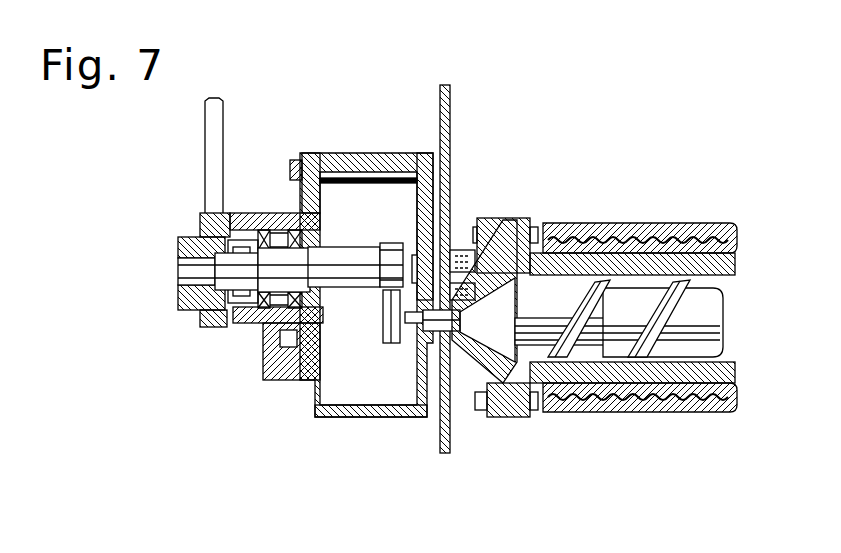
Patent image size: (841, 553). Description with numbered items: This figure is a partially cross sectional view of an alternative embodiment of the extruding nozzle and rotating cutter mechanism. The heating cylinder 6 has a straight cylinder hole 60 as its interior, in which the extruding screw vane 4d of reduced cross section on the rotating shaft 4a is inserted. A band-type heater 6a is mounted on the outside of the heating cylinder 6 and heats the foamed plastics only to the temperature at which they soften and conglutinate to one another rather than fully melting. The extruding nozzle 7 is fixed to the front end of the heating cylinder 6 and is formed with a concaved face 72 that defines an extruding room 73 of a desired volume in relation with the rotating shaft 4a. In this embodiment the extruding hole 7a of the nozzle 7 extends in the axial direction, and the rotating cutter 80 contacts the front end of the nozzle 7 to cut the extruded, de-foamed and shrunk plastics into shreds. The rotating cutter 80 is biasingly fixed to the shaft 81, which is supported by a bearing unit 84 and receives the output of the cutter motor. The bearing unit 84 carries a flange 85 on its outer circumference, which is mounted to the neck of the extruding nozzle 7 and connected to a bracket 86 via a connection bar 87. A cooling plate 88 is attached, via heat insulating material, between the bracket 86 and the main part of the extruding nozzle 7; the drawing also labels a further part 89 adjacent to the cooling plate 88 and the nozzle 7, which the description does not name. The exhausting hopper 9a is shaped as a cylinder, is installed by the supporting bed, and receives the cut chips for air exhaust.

The rotating shaft 4a is at (670, 400).
The extruding screw vane 4d is at (673, 282).
The heating cylinder 6 is at (627, 412).
The heater 6a is at (625, 223).
The extruding nozzle 7 is at (497, 218).
The extruding hole 7a is at (405, 330).
The exhausting hopper 9a is at (320, 412).
The straight cylinder hole 60 is at (577, 223).
The concaved face 72 is at (470, 400).
The extruding room 73 is at (520, 218).
The rotating cutter 80 is at (383, 345).
The shaft 81 is at (340, 258).
The bearing unit 84 is at (250, 330).
The flange 85 is at (303, 150).
The bracket 86 is at (428, 155).
The connection bar 87 is at (356, 160).
The cooling plate 88 is at (452, 130).
The fastening bolt 89 is at (455, 250).